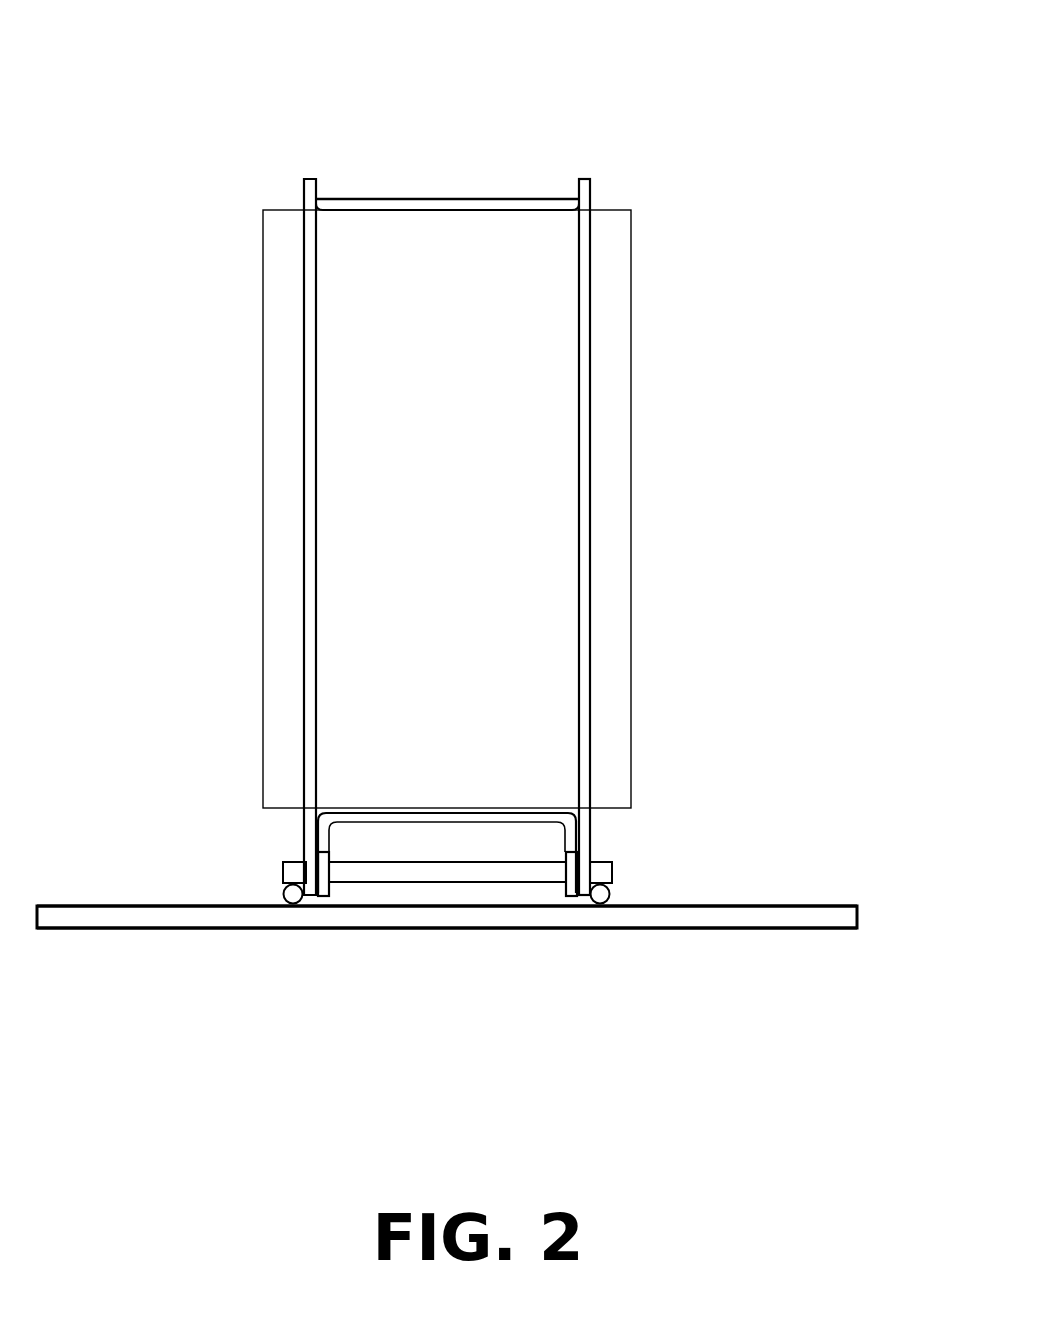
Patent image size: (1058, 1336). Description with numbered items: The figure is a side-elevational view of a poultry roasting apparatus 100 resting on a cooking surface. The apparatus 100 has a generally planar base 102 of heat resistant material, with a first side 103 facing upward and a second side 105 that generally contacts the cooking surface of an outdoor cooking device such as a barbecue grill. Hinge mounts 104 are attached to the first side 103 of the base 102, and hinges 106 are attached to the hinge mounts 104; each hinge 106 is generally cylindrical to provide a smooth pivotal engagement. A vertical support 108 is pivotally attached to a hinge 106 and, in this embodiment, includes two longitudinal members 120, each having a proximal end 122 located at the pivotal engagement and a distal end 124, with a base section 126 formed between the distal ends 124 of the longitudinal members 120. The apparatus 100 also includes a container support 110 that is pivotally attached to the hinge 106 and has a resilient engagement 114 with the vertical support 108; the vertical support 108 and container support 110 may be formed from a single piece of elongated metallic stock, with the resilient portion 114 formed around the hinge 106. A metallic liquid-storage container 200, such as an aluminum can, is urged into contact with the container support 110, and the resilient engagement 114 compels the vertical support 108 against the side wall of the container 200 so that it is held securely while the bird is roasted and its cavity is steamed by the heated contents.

The poultry roasting apparatus 100 is at (802, 80).
The base 102 is at (722, 917).
The first side 103 is at (754, 906).
The hinge mount 104 is at (612, 893).
The second side 105 is at (818, 927).
The hinge 106 is at (608, 860).
The vertical support 108 is at (590, 512).
The container support 110 is at (424, 812).
The resilient engagement 114 is at (323, 896).
The longitudinal member 120 is at (580, 347).
The proximal end 122 is at (305, 850).
The distal end 124 is at (305, 202).
The base section 126 is at (546, 198).
The metallic liquid-storage container 200 is at (631, 265).